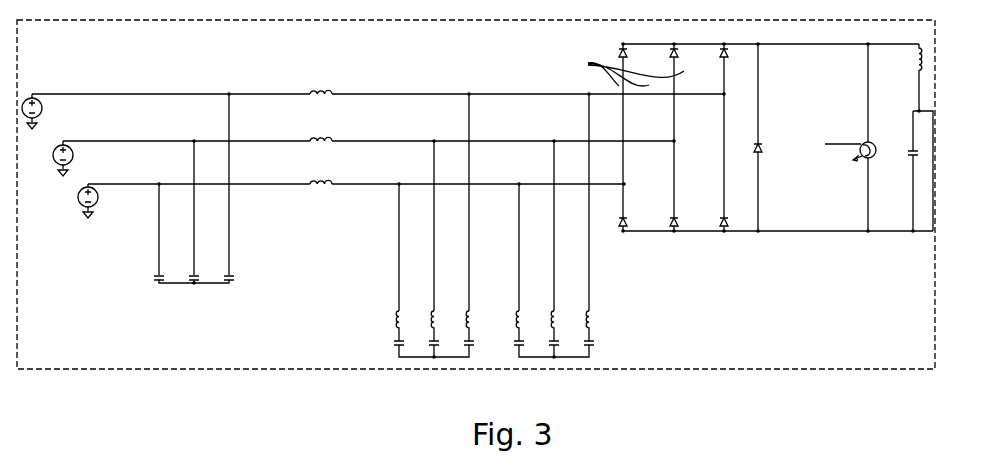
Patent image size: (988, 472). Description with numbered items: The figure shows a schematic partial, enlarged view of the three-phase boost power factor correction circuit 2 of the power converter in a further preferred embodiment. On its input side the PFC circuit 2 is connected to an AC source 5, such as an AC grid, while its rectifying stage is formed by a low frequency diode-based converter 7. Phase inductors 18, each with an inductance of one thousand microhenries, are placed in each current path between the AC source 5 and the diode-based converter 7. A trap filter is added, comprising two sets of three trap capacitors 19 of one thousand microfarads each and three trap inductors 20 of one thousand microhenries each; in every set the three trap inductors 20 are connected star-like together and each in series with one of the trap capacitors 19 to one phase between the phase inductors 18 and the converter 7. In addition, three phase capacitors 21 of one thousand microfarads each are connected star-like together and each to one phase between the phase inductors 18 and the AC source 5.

The boost power factor correction circuit 2 is at (934, 378).
The AC source 5 is at (140, 378).
The low frequency diode-based converter 7 is at (735, 252).
The phase inductors 18 is at (357, 208).
The trap capacitors 19 is at (628, 336).
The trap inductors 20 is at (628, 308).
The phase capacitors 21 is at (253, 268).